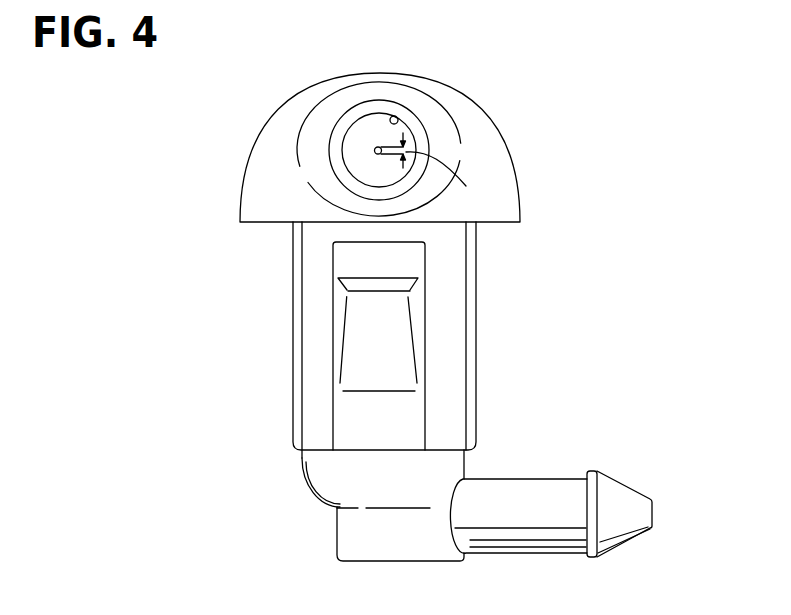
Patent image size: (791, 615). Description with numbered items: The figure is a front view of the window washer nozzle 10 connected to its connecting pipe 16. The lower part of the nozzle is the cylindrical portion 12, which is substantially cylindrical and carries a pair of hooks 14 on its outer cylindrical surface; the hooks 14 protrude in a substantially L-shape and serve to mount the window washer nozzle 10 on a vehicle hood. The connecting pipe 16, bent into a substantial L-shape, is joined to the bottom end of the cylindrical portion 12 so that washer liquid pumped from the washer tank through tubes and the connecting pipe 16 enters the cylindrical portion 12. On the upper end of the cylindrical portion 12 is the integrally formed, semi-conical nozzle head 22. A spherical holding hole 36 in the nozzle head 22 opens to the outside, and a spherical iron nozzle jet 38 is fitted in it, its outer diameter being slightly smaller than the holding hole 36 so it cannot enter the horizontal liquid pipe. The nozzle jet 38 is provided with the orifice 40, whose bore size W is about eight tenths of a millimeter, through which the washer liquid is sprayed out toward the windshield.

The window washer nozzle 10 is at (540, 80).
The cylindrical portion 12 is at (292, 335).
The hooks 14 is at (402, 337).
The connecting pipe 16 is at (335, 532).
The nozzle head 22 is at (264, 116).
The holding hole 36 is at (399, 117).
The nozzle jet 38 is at (364, 130).
The orifice 40 is at (376, 153).